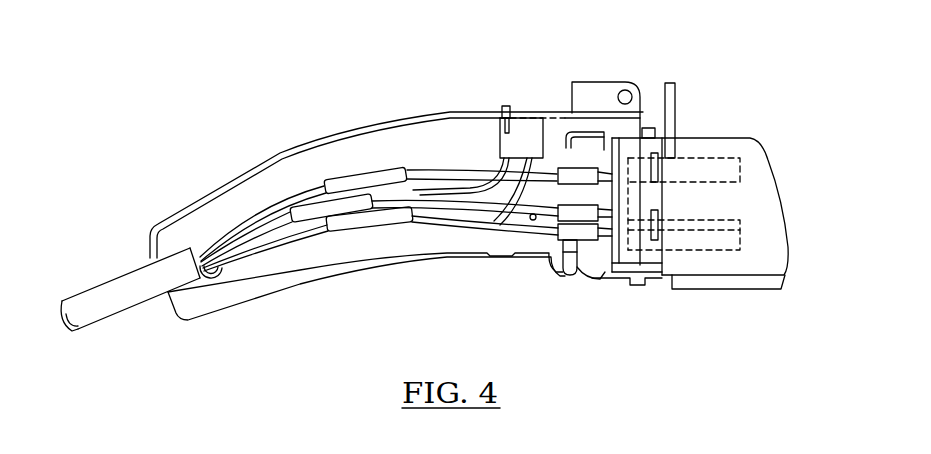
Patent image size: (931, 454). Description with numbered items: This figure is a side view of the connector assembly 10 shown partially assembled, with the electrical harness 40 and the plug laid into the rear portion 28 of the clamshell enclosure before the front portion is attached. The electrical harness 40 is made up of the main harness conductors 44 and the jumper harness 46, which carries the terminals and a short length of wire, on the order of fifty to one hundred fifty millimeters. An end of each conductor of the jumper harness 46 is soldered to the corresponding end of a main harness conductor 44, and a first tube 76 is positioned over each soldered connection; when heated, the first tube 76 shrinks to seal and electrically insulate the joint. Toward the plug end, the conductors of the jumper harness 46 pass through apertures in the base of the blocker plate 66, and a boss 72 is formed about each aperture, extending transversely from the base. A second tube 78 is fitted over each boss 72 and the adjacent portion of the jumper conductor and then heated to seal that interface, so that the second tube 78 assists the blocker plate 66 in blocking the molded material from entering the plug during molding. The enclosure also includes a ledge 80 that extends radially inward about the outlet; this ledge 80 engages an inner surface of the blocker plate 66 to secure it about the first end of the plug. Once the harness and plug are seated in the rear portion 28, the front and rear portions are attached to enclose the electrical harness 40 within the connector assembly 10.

The connector assembly 10 is at (700, 51).
The rear portion 28 is at (253, 293).
The electrical harness 40 is at (303, 170).
The main harness conductor 44 is at (269, 191).
The jumper harness 46 is at (434, 160).
The blocker plate 66 is at (620, 150).
The boss 72 is at (606, 167).
The first tube 76 is at (357, 173).
The second tube 78 is at (567, 173).
The ledge 80 is at (603, 265).